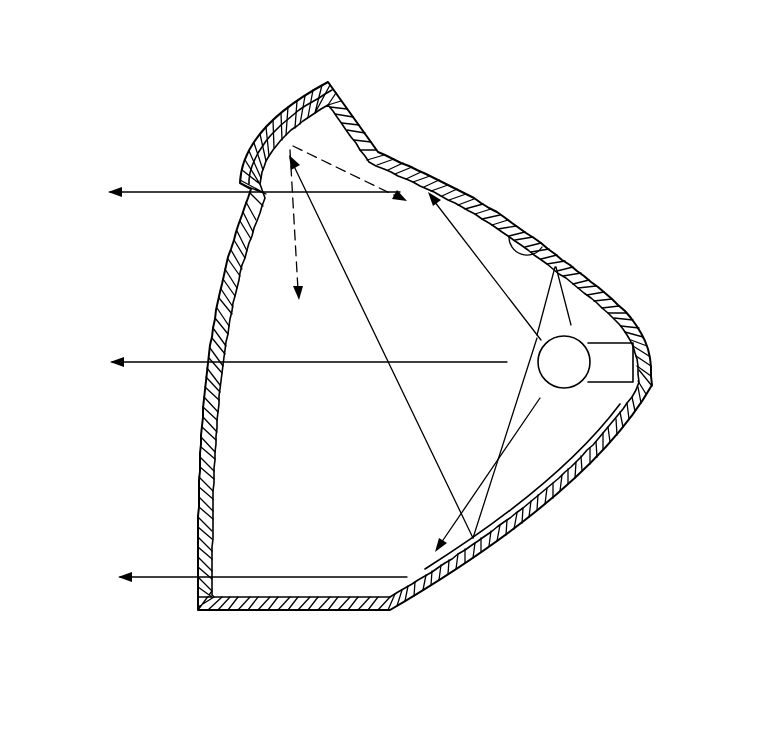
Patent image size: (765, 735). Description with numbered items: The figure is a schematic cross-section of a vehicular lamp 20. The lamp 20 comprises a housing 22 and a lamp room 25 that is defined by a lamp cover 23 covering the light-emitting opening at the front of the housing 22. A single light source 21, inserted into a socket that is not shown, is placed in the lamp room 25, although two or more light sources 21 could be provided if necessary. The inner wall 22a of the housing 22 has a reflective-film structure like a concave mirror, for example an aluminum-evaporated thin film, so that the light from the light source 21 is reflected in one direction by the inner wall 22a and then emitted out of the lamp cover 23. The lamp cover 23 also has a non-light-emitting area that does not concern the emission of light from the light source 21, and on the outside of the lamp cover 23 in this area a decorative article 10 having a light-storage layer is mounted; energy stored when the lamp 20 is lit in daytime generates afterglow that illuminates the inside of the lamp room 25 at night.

The decorative article 10 is at (297, 100).
The lamp 20 is at (107, 92).
The light source 21 is at (575, 383).
The housing 22 is at (475, 200).
The inner wall 22a is at (542, 243).
The lamp cover 23 is at (197, 538).
The lamp room 25 is at (398, 512).